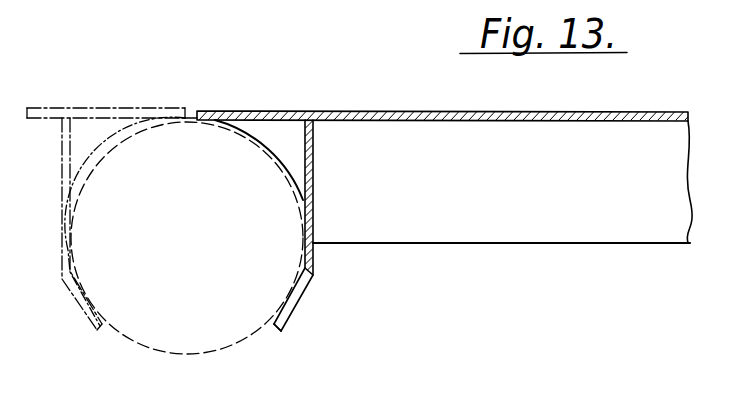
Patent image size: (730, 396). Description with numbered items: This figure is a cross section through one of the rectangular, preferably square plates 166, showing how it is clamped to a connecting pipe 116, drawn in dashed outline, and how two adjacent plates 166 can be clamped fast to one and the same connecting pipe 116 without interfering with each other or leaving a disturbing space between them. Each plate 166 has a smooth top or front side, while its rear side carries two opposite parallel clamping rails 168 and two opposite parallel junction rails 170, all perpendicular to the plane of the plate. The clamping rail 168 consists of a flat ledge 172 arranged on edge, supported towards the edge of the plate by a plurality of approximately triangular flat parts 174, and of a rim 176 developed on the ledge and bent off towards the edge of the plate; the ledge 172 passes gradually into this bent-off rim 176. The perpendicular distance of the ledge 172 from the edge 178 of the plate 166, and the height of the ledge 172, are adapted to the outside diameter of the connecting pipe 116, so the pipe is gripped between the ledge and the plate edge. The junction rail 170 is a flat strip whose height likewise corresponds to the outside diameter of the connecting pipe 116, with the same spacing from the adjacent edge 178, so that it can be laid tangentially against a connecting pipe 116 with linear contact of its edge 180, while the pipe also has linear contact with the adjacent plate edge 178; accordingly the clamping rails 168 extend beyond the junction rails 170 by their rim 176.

The connecting pipe 116 is at (148, 353).
The plate 166 is at (89, 104).
The clamping rail 168 is at (321, 278).
The junction rail 170 is at (490, 246).
The ledge 172 is at (315, 178).
The triangular flat part 174 is at (282, 140).
The rim 176 is at (293, 313).
The edge of the plate 178 is at (189, 116).
The edge of the junction rail 180 is at (622, 248).